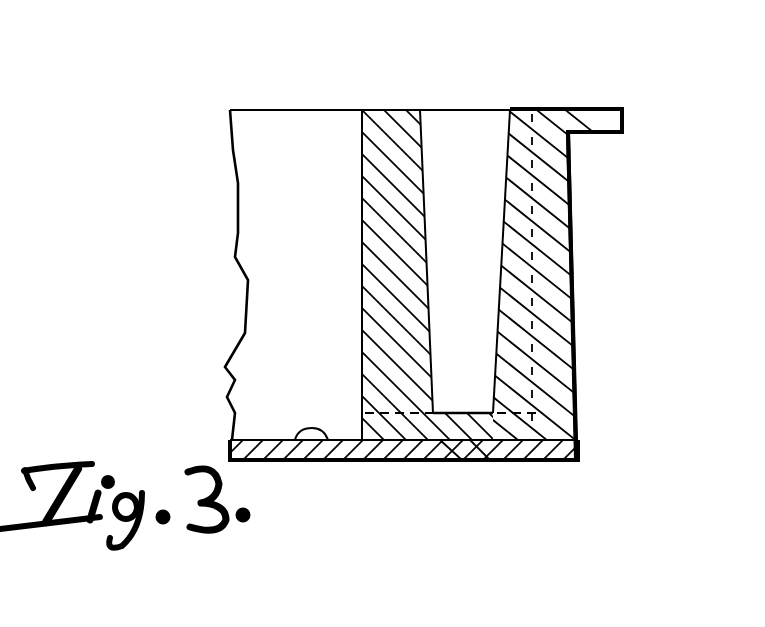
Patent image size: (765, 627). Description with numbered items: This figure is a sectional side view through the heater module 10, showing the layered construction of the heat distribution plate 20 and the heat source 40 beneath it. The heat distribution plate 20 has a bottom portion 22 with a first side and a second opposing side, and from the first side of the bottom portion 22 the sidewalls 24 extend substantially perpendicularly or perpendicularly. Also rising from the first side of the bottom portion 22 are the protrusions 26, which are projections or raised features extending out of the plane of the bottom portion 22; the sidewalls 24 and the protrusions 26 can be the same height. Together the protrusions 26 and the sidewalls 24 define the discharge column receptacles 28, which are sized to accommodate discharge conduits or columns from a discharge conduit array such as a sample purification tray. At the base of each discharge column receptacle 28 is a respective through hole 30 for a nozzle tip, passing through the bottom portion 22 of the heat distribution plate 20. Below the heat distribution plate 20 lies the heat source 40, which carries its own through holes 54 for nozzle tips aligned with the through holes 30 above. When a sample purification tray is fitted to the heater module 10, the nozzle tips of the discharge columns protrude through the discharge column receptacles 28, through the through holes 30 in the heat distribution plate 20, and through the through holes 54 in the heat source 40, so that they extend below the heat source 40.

The heater module 10 is at (331, 92).
The heat distribution plate 20 is at (607, 213).
The bottom portion 22 is at (525, 462).
The sidewalls 24 is at (576, 332).
The protrusions 26 is at (384, 122).
The discharge column receptacles 28 is at (486, 127).
The through hole for a nozzle tip 30 is at (453, 462).
The heat source 40 is at (325, 442).
The through holes for nozzle tips 54 is at (482, 462).